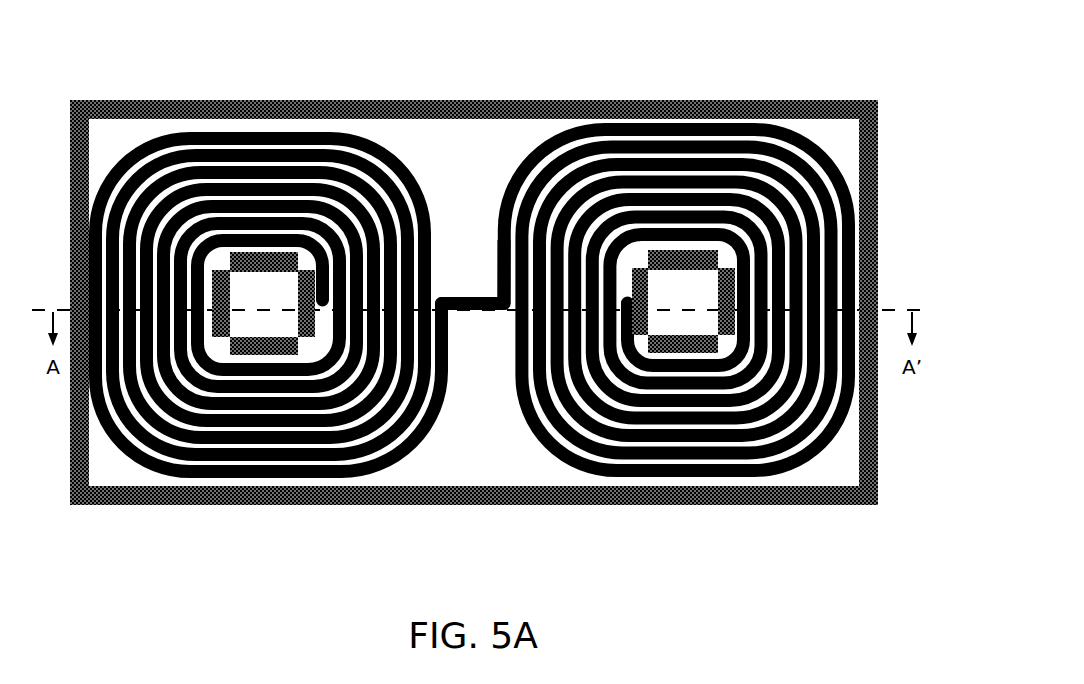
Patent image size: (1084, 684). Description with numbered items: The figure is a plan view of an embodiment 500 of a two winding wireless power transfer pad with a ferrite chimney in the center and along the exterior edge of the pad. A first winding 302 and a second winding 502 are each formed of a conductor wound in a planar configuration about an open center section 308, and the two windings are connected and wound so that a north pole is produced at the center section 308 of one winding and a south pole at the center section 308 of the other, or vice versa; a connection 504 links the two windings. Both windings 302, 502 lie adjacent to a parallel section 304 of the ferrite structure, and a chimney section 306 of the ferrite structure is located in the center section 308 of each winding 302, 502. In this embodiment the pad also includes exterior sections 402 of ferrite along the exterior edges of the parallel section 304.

The embodiment of a two winding WPT pad 500 is at (134, 64).
The interconnect between coils 504 is at (472, 297).
The chimney section 306 is at (640, 340).
The center section 308 is at (262, 318).
The parallel section 304 is at (113, 463).
The first winding 302 is at (376, 484).
The second winding 502 is at (575, 462).
The exterior section 402 is at (690, 506).